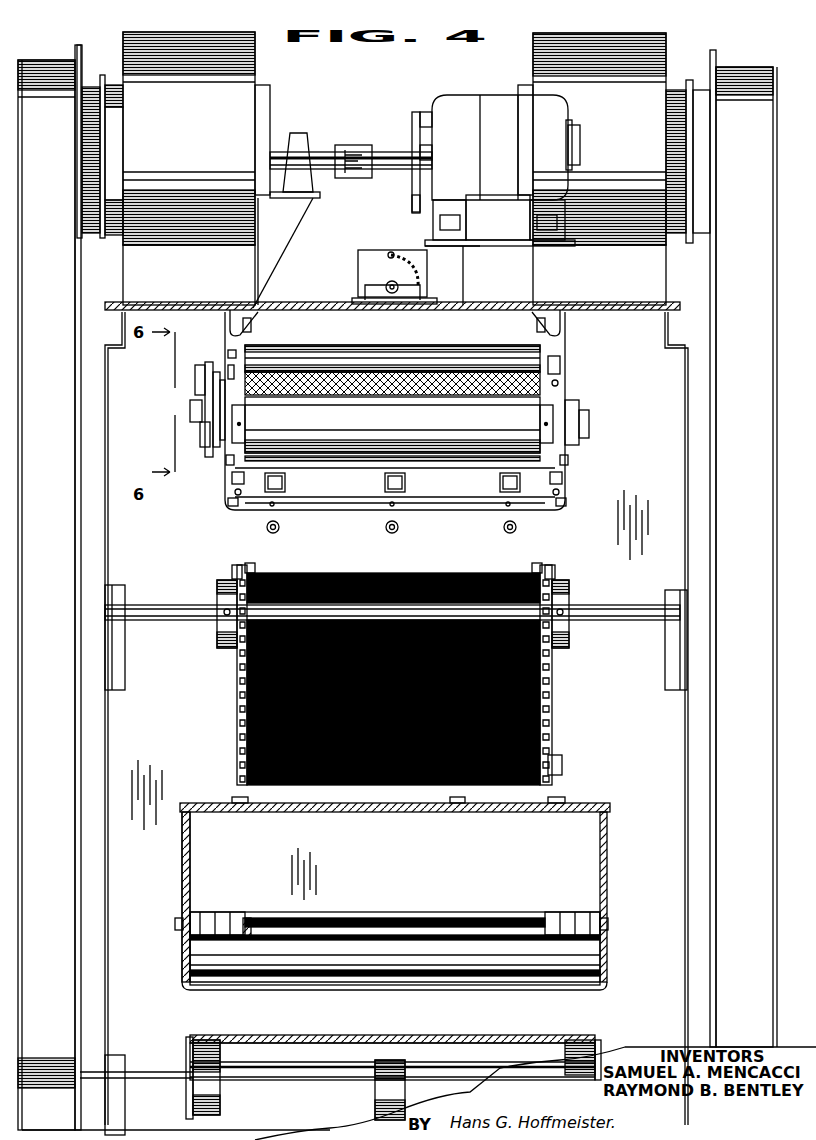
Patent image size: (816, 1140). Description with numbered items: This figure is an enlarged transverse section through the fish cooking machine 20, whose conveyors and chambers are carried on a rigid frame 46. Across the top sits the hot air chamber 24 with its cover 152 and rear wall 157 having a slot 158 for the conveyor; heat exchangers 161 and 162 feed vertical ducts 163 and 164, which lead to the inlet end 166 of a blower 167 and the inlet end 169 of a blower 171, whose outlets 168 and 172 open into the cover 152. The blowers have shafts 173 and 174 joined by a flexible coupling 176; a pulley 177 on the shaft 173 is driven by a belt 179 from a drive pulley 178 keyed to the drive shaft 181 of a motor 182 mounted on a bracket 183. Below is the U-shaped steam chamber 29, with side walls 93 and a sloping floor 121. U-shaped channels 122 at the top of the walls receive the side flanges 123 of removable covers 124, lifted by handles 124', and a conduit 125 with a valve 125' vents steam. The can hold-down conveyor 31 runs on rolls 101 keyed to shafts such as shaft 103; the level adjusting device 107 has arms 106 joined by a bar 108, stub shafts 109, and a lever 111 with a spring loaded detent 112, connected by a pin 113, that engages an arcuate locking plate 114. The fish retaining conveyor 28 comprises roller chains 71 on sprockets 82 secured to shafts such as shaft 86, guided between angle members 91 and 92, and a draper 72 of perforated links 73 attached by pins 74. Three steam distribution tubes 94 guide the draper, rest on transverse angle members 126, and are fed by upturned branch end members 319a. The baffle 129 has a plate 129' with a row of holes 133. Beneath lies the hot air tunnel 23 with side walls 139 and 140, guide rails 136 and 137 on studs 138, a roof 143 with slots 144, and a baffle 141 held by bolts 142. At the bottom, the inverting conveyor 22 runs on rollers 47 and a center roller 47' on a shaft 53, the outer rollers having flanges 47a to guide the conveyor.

The fish cooking machine 20 is at (699, 49).
The inverting conveyor 22 is at (452, 945).
The hot air tunnel 23 is at (390, 875).
The hot air chamber 24 is at (490, 411).
The fish retaining conveyor 28 is at (348, 447).
The steam chamber 29 is at (576, 340).
The can hold-down conveyor 31 is at (432, 345).
The rigid frame 46 is at (102, 858).
The roller 47 is at (404, 1058).
The center roller 47' is at (361, 1090).
The flange 47a is at (190, 1050).
The shaft 53 is at (160, 1080).
The roller chain 71 is at (232, 478).
The draper 72 is at (435, 470).
The perforated link 73 is at (422, 455).
The pin 74 is at (256, 566).
The sprocket 82 is at (215, 640).
The shaft 86 is at (175, 605).
The angle member 91 is at (226, 461).
The angle member 92 is at (235, 492).
The side wall 93 is at (228, 504).
The steam distribution tube 94 is at (271, 506).
The roll 101 is at (392, 383).
The shaft 103 is at (232, 352).
The arm 106 is at (246, 437).
The level adjusting device 107 is at (205, 385).
The bar 108 is at (442, 383).
The stub shaft 109 is at (192, 410).
The lever 111 is at (220, 410).
The spring loaded detent 112 is at (195, 375).
The pin 113 is at (210, 440).
The arcuate locking plate 114 is at (213, 395).
The sloping floor 121 is at (346, 505).
The U-shaped channel 122 is at (232, 312).
The side flange 123 is at (251, 325).
The removable cover 124 is at (472, 275).
The handle 124' is at (360, 288).
The conduit 125 is at (365, 270).
The valve 125' is at (378, 252).
The angle member 126 is at (452, 500).
The baffle 129 is at (590, 386).
The plate 129' is at (586, 367).
The hole 133 is at (398, 383).
The guide rail 136 is at (248, 915).
The guide rail 137 is at (545, 912).
The stud 138 is at (210, 915).
The side wall 139 is at (190, 862).
The side wall 140 is at (603, 862).
The baffle 141 is at (470, 872).
The bolt 142 is at (450, 803).
The roof 143 is at (345, 812).
The slot 144 is at (242, 812).
The cover 152 is at (168, 305).
The rear wall 157 is at (180, 735).
The slot 158 is at (563, 770).
The heat exchanger 161 is at (697, 907).
The heat exchanger 162 is at (80, 930).
The duct 163 is at (762, 786).
The duct 164 is at (60, 768).
The inlet end 166 is at (678, 152).
The blower 167 is at (635, 123).
The outlet 168 is at (647, 276).
The inlet end 169 is at (108, 150).
The blower 171 is at (202, 117).
The outlet 172 is at (193, 272).
The shaft 173 is at (390, 150).
The shaft 174 is at (310, 140).
The flexible coupling 176 is at (353, 145).
The pulley 177 is at (412, 200).
The drive pulley 178 is at (430, 118).
The belt 179 is at (422, 132).
The drive shaft 181 is at (432, 152).
The motor 182 is at (514, 144).
The bracket 183 is at (500, 246).
The upturned branch end member 319a is at (268, 531).